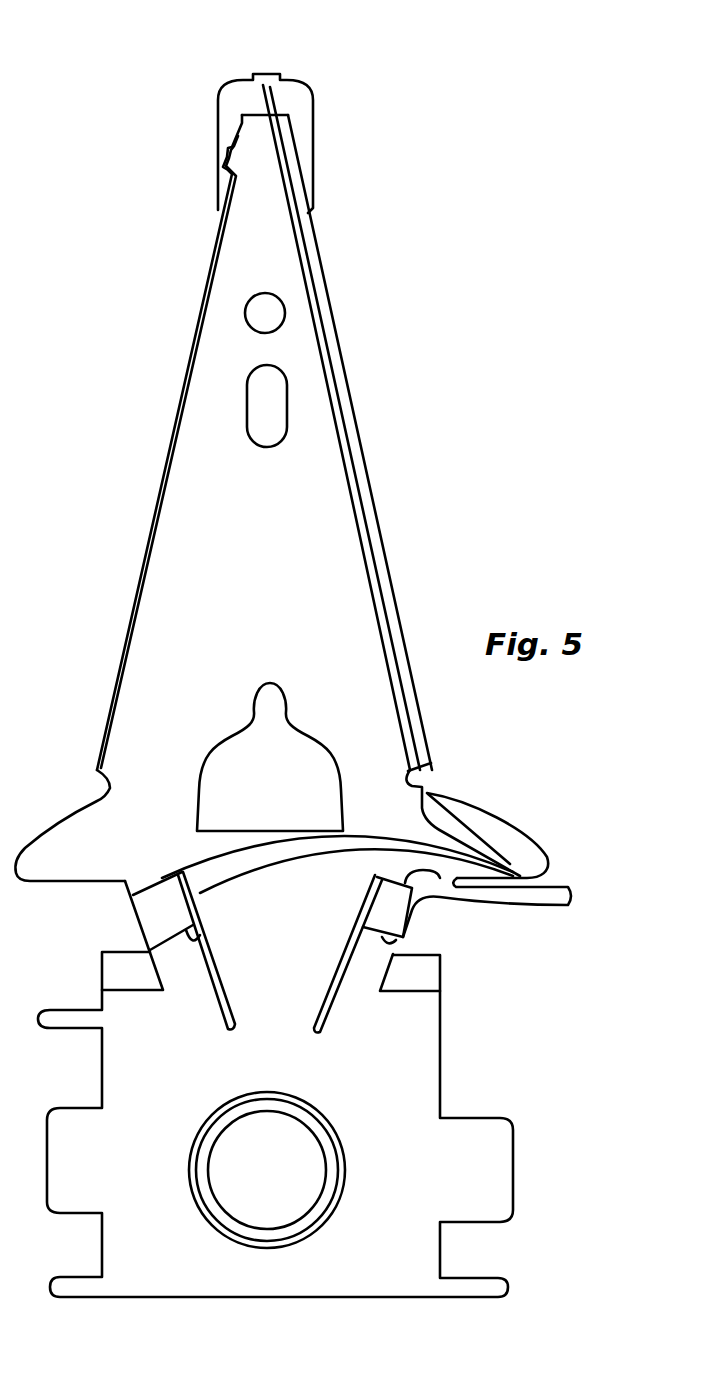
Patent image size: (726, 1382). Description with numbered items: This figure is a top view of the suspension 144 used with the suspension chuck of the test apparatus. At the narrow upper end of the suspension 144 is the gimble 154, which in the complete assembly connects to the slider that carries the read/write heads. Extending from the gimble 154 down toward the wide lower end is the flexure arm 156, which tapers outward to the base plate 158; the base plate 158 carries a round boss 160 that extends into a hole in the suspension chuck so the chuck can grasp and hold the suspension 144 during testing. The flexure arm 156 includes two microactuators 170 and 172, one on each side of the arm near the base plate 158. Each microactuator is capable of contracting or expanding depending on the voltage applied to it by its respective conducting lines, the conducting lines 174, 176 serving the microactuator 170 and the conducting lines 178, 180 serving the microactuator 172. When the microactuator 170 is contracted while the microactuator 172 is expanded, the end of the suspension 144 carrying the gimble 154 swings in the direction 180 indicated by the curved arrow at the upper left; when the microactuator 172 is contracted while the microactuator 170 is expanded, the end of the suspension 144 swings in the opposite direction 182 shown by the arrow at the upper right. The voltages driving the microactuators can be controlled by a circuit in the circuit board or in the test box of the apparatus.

The suspension 144 is at (472, 414).
The gimble 154 is at (318, 120).
The flexure arm 156 is at (141, 570).
The base plate 158 is at (425, 968).
The boss 160 is at (333, 1155).
The microactuator 170 is at (152, 910).
The microactuator 172 is at (382, 907).
The conducting line 174 is at (205, 880).
The conducting line 176 is at (196, 858).
The conducting line 178 is at (555, 890).
The direction 180 is at (218, 47).
The direction 182 is at (303, 48).